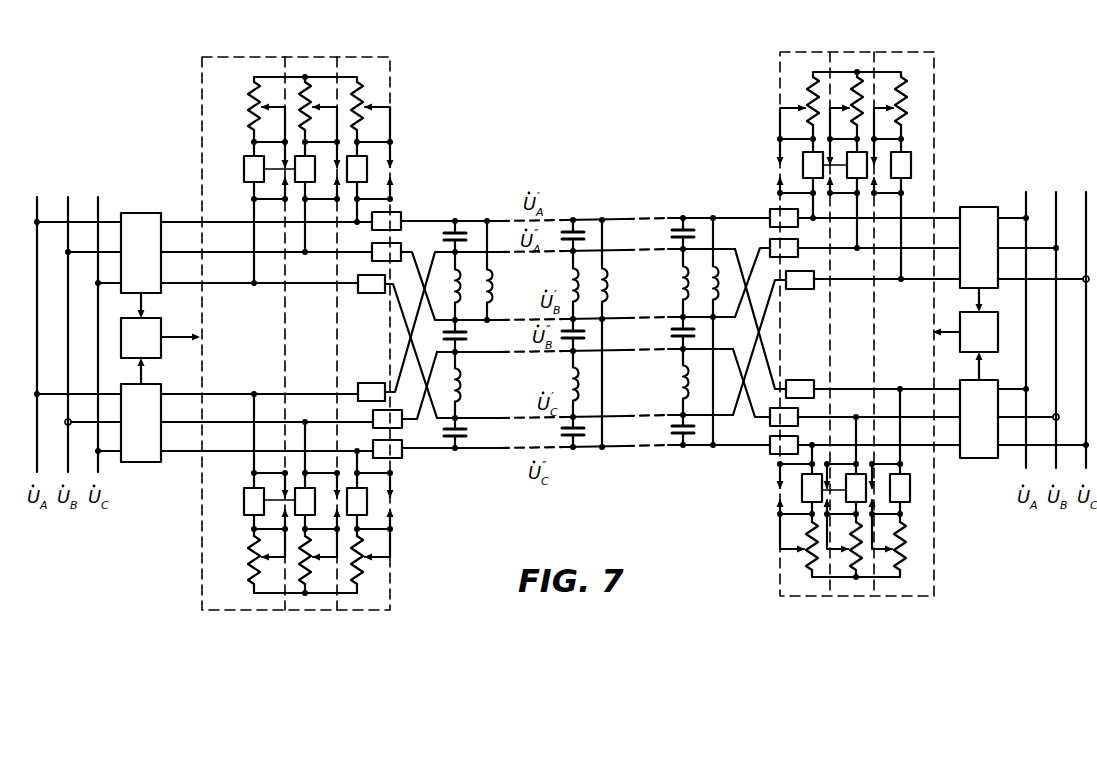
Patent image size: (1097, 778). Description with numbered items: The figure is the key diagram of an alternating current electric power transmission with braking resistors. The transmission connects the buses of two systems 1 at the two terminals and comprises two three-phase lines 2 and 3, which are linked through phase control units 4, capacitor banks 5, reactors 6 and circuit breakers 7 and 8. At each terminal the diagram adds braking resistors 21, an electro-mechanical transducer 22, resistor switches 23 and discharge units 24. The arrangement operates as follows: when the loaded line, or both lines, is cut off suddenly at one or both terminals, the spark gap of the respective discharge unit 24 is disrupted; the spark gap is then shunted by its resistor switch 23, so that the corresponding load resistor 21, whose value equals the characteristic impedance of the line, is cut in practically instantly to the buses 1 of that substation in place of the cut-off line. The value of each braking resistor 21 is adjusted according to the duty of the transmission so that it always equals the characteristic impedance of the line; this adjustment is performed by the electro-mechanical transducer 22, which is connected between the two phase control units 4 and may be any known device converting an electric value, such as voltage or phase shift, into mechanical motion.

The buses of two systems 1 is at (98, 198).
The three-phase line 2 is at (409, 222).
The three-phase line 3 is at (718, 249).
The phase control unit 4 is at (559, 334).
The capacitor bank 5 is at (463, 335).
The reactor 6 is at (489, 284).
The circuit breaker 7 is at (370, 285).
The circuit breaker 8 is at (385, 449).
The braking resistor 21 is at (253, 108).
The electro-mechanical transducer 22 is at (559, 336).
The resistor switch 23 is at (256, 168).
The discharge unit 24 is at (392, 168).